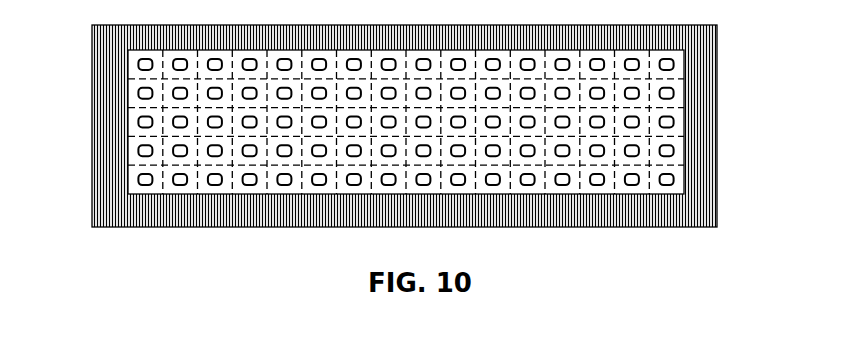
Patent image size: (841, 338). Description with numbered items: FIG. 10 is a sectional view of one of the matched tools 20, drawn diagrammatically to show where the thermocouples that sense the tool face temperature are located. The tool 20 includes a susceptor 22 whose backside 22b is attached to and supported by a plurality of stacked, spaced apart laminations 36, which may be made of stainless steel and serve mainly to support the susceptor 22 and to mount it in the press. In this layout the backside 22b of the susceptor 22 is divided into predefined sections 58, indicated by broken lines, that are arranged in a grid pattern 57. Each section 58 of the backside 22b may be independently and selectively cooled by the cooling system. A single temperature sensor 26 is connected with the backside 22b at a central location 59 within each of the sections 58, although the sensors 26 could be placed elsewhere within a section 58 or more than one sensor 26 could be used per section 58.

The matched tools 20 is at (722, 121).
The susceptor 22 is at (128, 122).
The backside 22b is at (128, 62).
The temperature sensors 26 is at (668, 181).
The laminations 36 is at (686, 212).
The grid pattern 57 is at (686, 73).
The sections 58 is at (132, 190).
The central location 59 is at (432, 190).